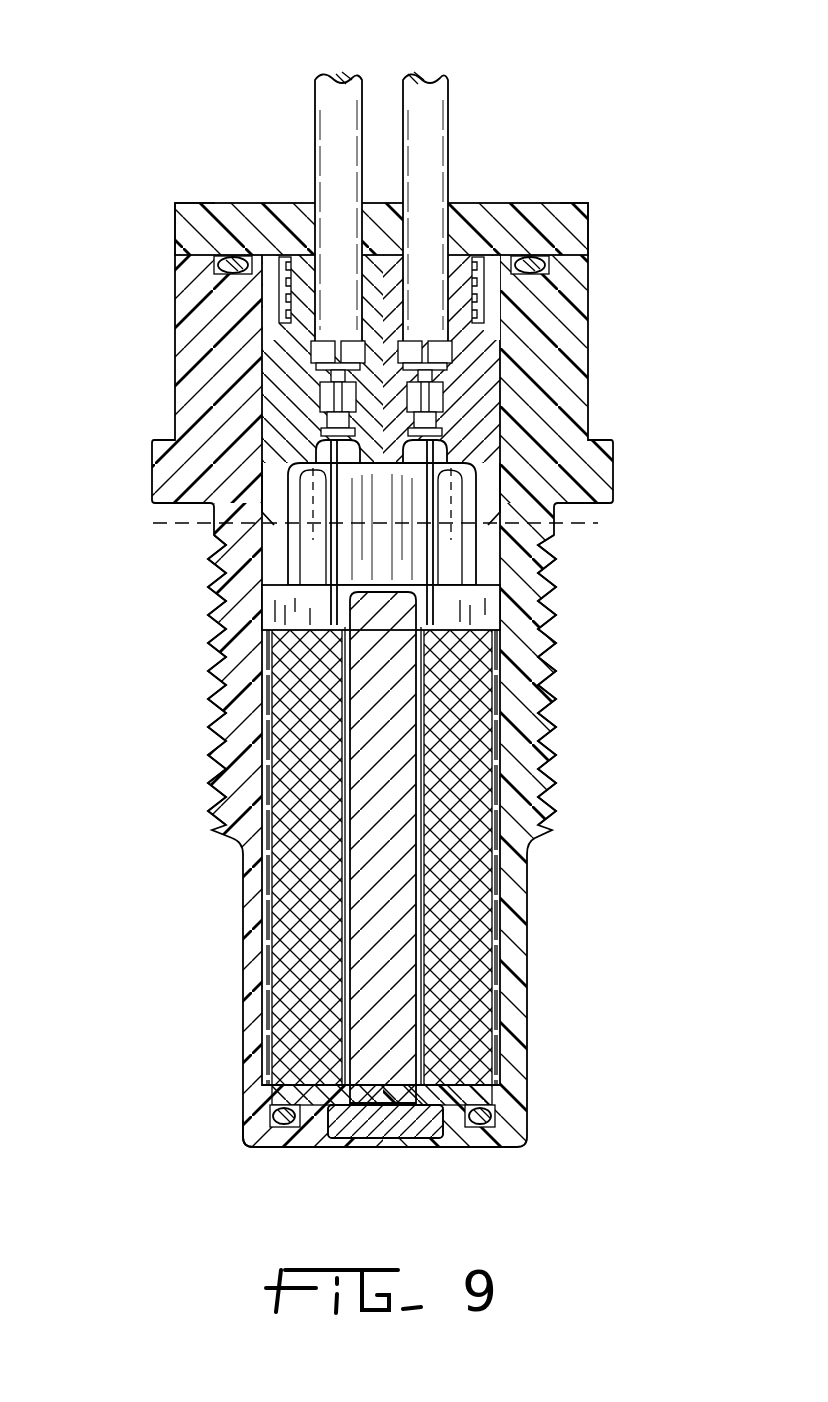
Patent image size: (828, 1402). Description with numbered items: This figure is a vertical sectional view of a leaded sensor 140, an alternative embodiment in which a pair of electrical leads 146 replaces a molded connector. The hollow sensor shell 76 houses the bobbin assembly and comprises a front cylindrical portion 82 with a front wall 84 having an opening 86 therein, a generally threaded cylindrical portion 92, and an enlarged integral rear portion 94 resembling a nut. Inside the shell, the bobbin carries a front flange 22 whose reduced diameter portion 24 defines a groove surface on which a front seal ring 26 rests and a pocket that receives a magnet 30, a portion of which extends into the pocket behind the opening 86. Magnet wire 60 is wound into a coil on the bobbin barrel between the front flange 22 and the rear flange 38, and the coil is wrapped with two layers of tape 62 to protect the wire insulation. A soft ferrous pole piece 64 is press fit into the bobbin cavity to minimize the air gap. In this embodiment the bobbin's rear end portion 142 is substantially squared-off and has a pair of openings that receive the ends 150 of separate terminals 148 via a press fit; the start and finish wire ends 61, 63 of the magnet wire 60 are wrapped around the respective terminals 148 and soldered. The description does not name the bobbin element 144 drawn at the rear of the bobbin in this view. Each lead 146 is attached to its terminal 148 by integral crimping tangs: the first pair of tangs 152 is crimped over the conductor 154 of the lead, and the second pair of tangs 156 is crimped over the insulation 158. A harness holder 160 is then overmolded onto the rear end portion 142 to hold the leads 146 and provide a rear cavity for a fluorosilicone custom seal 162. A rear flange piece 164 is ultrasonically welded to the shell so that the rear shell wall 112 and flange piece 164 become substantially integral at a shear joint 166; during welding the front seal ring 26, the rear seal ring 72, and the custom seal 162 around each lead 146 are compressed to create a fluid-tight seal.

The leaded sensor 140 is at (381, 617).
The electrical leads 146 is at (424, 70).
The shear joint 166 is at (200, 208).
The custom seal 162 is at (462, 258).
The rear flange piece 164 is at (541, 215).
The rear shell wall 112 is at (583, 205).
The rear seal ring 72 is at (225, 266).
The insulation 158 is at (345, 332).
The rear portion 94 is at (200, 326).
The harness holder 160 is at (480, 330).
The conductor 154 is at (335, 358).
The second pair of tangs 156 is at (455, 372).
The first pair of tangs 152 is at (320, 398).
The terminals 148 is at (455, 432).
The magnet wire 60 is at (330, 445).
The rear end portion 142 is at (445, 510).
The finish wire end portion 63 is at (500, 488).
The ends of terminals 150 is at (373, 525).
The start wire end portion 61 is at (335, 560).
The cylinder 144 is at (437, 558).
The rear flange 38 is at (538, 608).
The sensor shell 76 is at (612, 651).
The threaded cylindrical portion 92 is at (235, 680).
The pole piece 64 is at (398, 725).
The tape 62 is at (505, 965).
The front cylindrical portion 82 is at (243, 995).
The front flange 22 is at (500, 1090).
The front seal ring 26 is at (500, 1118).
The reduced diameter portion 24 is at (275, 1140).
The front wall 84 is at (322, 1150).
The opening 86 is at (382, 1150).
The magnet 30 is at (425, 1150).